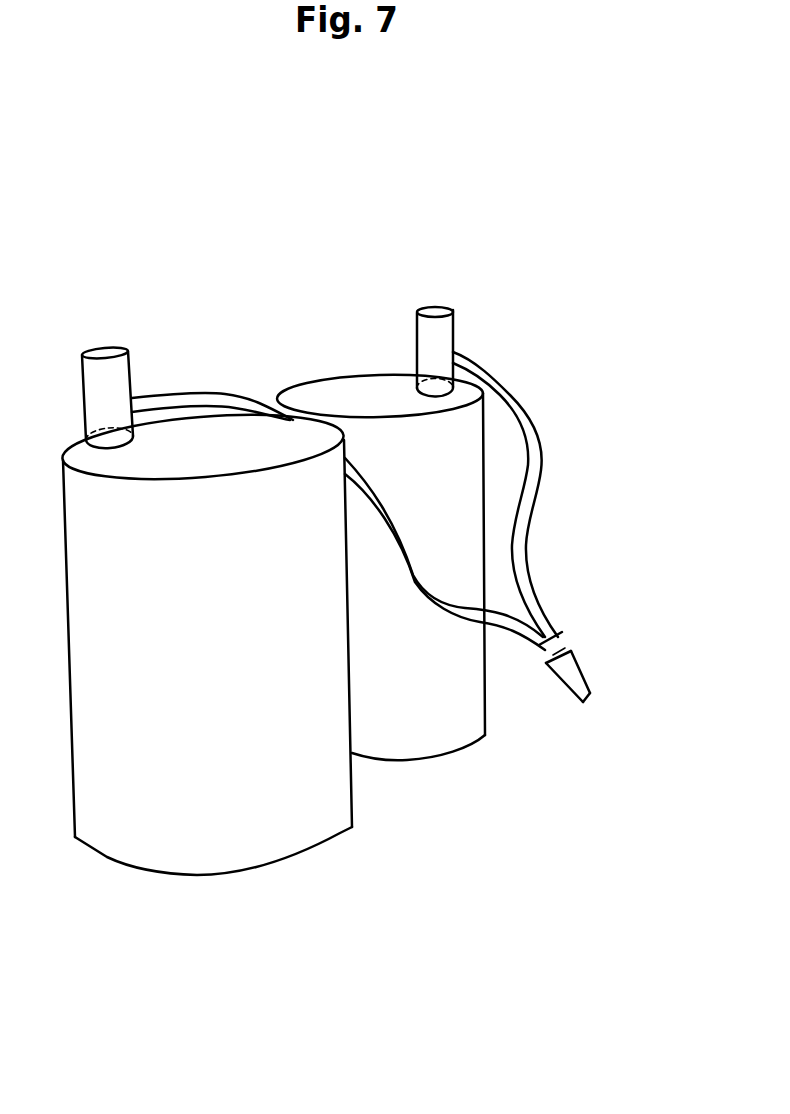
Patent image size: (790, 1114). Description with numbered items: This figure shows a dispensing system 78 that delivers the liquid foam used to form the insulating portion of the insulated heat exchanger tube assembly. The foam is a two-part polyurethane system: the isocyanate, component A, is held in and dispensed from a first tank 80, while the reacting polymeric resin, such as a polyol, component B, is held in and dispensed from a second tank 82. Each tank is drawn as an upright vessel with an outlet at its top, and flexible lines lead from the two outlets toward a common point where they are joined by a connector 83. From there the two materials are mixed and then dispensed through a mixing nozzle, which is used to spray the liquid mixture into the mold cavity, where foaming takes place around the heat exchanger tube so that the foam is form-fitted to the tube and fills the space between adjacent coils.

The dispensing system 78 is at (580, 365).
The first tank 80 is at (447, 680).
The second tank 82 is at (290, 728).
The connector fitting 83 is at (587, 672).